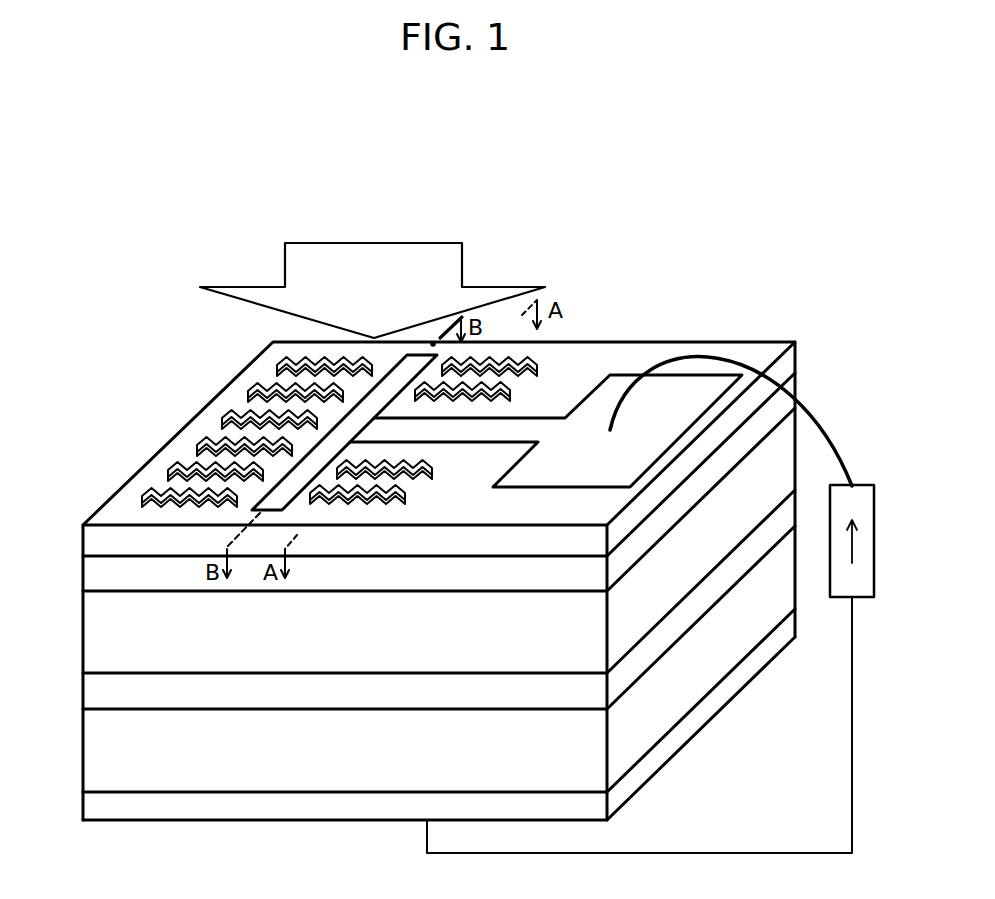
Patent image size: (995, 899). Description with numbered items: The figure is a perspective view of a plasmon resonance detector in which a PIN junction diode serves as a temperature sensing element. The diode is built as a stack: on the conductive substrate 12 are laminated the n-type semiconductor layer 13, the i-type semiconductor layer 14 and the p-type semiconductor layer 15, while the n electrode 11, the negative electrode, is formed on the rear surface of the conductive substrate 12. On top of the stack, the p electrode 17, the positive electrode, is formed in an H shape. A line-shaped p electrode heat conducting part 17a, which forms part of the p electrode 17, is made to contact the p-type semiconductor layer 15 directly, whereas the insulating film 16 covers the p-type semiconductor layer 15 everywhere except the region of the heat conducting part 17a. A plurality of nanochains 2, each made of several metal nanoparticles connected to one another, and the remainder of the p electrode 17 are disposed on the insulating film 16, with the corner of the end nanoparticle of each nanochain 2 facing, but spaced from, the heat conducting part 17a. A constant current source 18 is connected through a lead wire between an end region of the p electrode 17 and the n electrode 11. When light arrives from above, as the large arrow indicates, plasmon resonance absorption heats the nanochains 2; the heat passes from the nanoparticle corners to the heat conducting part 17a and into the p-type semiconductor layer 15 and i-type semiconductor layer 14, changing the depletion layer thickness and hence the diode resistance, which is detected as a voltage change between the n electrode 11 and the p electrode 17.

The nanochain 2 is at (143, 495).
The n electrode 11 is at (86, 808).
The conductive substrate 12 is at (86, 753).
The n-type semiconductor layer 13 is at (86, 694).
The i-type semiconductor layer 14 is at (86, 636).
The p-type semiconductor layer 15 is at (86, 578).
The insulating film 16 is at (86, 543).
The p electrode 17 is at (611, 383).
The p electrode heat conducting part 17a is at (418, 363).
The constant current source 18 is at (855, 485).